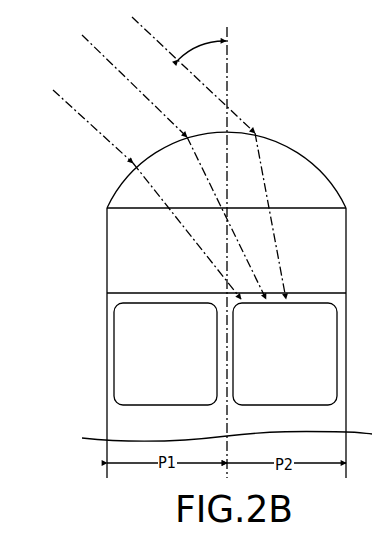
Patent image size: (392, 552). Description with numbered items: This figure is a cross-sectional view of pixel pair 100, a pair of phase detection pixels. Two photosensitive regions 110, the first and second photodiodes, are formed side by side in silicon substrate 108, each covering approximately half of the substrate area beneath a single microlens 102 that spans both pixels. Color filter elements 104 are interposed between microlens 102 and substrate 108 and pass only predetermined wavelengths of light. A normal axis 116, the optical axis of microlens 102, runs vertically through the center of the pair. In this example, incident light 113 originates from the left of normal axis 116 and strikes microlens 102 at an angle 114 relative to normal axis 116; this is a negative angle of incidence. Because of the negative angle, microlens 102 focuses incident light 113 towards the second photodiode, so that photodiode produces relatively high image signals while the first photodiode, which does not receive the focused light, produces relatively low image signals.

The pixel pair 100 is at (314, 96).
The microlens 102 is at (281, 159).
The color filter elements 104 is at (118, 244).
The silicon substrate 108 is at (117, 421).
The photosensitive regions 110 is at (124, 345).
The incident light 113 is at (107, 143).
The angle 114 is at (186, 51).
The normal axis 116 is at (227, 55).